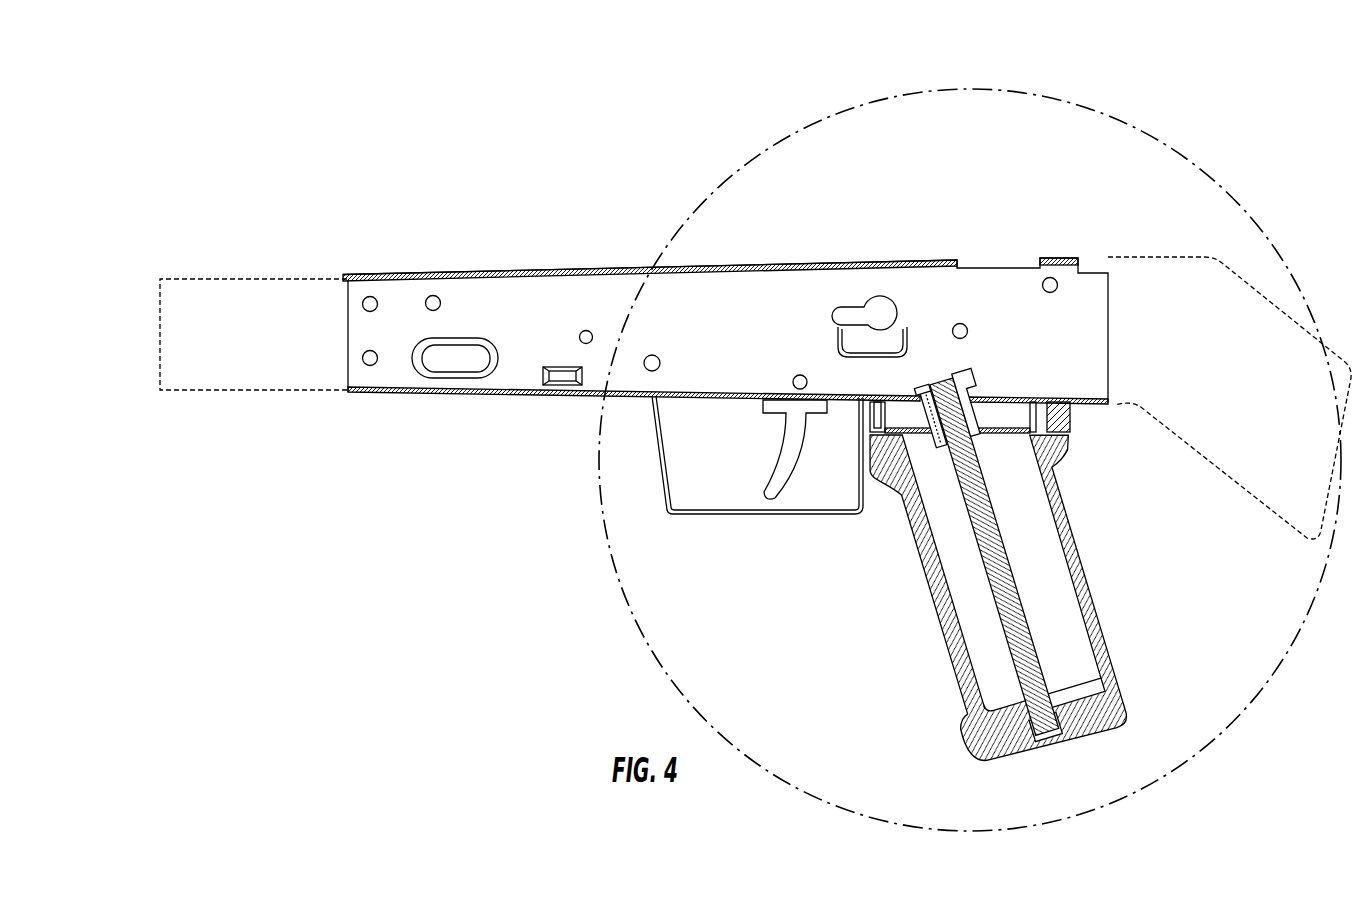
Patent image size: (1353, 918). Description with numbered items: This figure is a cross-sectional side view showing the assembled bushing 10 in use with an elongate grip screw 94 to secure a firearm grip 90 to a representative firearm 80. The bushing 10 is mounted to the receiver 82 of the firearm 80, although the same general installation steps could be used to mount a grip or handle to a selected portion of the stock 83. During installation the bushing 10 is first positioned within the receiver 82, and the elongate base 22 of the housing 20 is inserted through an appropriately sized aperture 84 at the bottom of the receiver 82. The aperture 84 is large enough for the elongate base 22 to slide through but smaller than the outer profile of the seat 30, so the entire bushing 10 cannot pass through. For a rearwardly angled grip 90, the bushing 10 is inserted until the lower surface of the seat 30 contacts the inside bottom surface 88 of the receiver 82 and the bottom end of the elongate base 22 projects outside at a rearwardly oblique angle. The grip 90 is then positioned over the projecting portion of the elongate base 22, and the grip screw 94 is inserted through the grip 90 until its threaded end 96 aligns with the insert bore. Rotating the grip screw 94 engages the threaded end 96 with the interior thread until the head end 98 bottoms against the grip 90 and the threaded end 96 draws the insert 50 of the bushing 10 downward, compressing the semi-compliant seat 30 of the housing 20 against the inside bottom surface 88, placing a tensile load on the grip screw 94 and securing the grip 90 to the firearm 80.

The bushing 10 is at (1032, 487).
The housing 20 is at (922, 573).
The elongate base 22 is at (1082, 550).
The seat 30 is at (971, 402).
The insert 50 is at (930, 416).
The firearm 80 is at (761, 190).
The receiver 82 is at (729, 400).
The aperture 84 is at (906, 420).
The stock 83 is at (291, 390).
The inside bottom surface 88 is at (1022, 392).
The firearm grip 90 is at (1032, 560).
The grip screw 94 is at (994, 556).
The threaded end 96 is at (1045, 417).
The head end 98 is at (1043, 718).